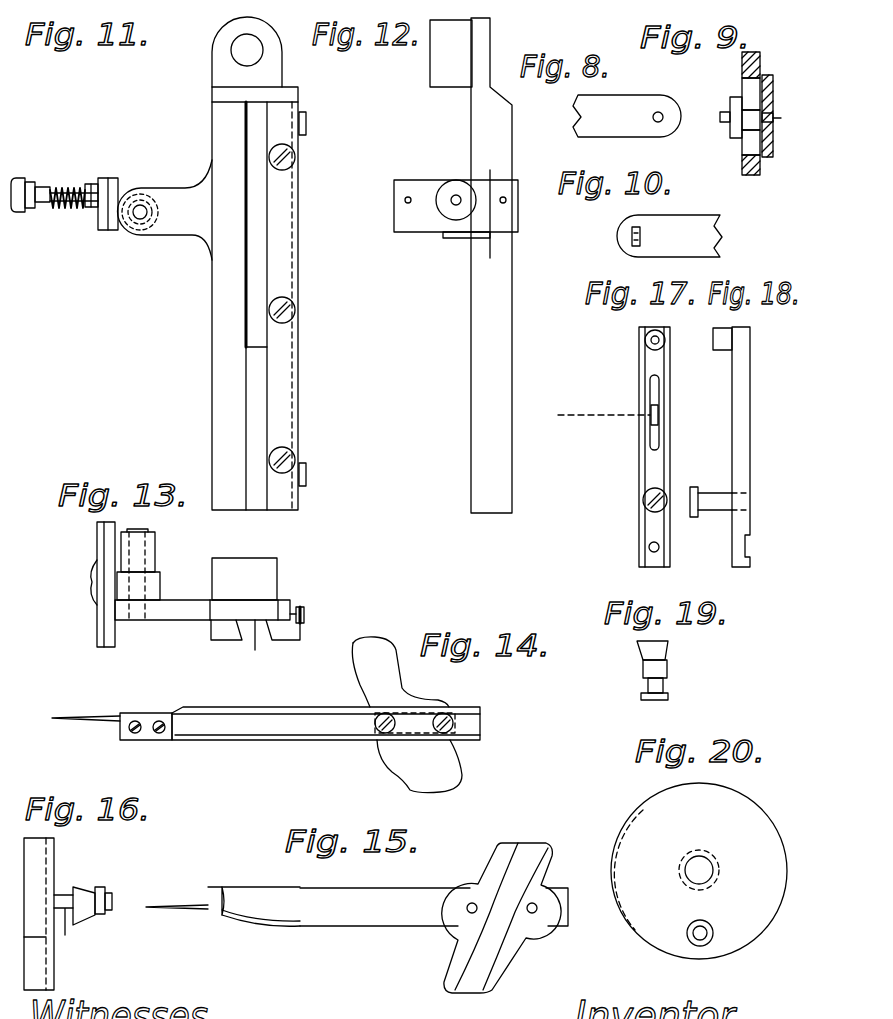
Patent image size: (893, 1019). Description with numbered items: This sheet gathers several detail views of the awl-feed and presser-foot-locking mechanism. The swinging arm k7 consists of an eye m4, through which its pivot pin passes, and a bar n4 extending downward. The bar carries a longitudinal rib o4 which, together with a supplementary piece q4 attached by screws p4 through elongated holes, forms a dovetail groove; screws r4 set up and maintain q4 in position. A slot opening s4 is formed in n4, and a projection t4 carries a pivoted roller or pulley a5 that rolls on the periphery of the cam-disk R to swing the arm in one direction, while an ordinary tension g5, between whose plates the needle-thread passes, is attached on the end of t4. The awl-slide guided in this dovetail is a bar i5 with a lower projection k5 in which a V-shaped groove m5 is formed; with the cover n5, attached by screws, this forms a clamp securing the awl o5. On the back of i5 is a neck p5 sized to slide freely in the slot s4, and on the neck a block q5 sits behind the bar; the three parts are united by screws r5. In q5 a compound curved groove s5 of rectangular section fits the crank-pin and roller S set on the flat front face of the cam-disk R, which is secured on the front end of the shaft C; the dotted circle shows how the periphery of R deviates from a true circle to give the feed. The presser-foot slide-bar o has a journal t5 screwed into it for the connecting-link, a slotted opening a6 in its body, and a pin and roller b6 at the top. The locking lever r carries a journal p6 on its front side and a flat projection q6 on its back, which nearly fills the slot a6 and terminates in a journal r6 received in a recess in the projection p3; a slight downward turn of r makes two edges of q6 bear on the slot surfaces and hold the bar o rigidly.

In FIG. 11, the eye m4 is at (262, 58).
In FIG. 12, the eye m4 is at (451, 53).
In FIG. 13, the eye m4 is at (244, 579).
In FIG. 11, the bar n4 is at (260, 520).
In FIG. 12, the bar n4 is at (491, 265).
In FIG. 13, the bar n4 is at (274, 644).
In FIG. 11, the longitudinal rib o4 is at (243, 420).
In FIG. 13, the longitudinal rib o4 is at (226, 640).
In FIG. 11, the supplementary piece q4 is at (280, 368).
In FIG. 13, the supplementary piece q4 is at (292, 638).
In FIG. 11, the slot opening s4 is at (260, 218).
In FIG. 11, the screws p4 is at (294, 157).
In FIG. 11, the screws r4 is at (307, 124).
In FIG. 13, the screws r4 is at (304, 614).
In FIG. 11, the projection t4 is at (165, 210).
In FIG. 12, the projection t4 is at (466, 238).
In FIG. 13, the projection t4 is at (164, 616).
In FIG. 11, the tension g5 is at (100, 180).
In FIG. 12, the tension g5 is at (456, 191).
In FIG. 13, the tension g5 is at (90, 582).
In FIG. 11, the swinging arm k7 is at (176, 322).
In FIG. 12, the swinging arm k7 is at (443, 336).
In FIG. 13, the swinging arm k7 is at (296, 576).
In FIG. 8, the lever r is at (627, 116).
In FIG. 9, the lever r is at (730, 130).
In FIG. 10, the lever r is at (669, 236).
In FIG. 17, the lever r is at (568, 428).
In FIG. 8, the journal p6 is at (656, 112).
In FIG. 9, the journal p6 is at (720, 117).
In FIG. 9, the flat projection q6 is at (750, 110).
In FIG. 10, the flat projection q6 is at (632, 232).
In FIG. 17, the flat projection q6 is at (650, 410).
In FIG. 9, the projection p3 is at (774, 100).
In FIG. 9, the journal r6 is at (781, 118).
In FIG. 10, the journal r6 is at (632, 242).
In FIG. 9, the slotted opening a6 is at (745, 145).
In FIG. 17, the slotted opening a6 is at (660, 430).
In FIG. 9, the slide-bar o is at (760, 168).
In FIG. 17, the slide-bar o is at (650, 460).
In FIG. 18, the slide-bar o is at (742, 430).
In FIG. 19, the slide-bar o is at (660, 650).
In FIG. 17, the pin and roller b6 is at (645, 340).
In FIG. 18, the pin and roller b6 is at (713, 338).
In FIG. 19, the pin and roller b6 is at (660, 670).
In FIG. 17, the journal t5 is at (643, 500).
In FIG. 18, the journal t5 is at (714, 510).
In FIG. 19, the journal t5 is at (648, 684).
In FIG. 13, the roller or pulley a5 is at (154, 550).
In FIG. 14, the bar i5 is at (326, 723).
In FIG. 16, the bar i5 is at (88, 912).
In FIG. 15, the bar i5 is at (434, 907).
In FIG. 14, the cover n5 is at (146, 738).
In FIG. 16, the cover n5 is at (112, 895).
In FIG. 14, the awl o5 is at (90, 725).
In FIG. 16, the awl o5 is at (176, 905).
In FIG. 14, the screws r5 is at (448, 718).
In FIG. 15, the screws r5 is at (470, 902).
In FIG. 14, the block q5 is at (407, 715).
In FIG. 16, the block q5 is at (34, 906).
In FIG. 15, the block q5 is at (508, 955).
In FIG. 16, the projection k5 is at (98, 887).
In FIG. 16, the neck p5 is at (80, 925).
In FIG. 16, the V-shaped groove m5 is at (100, 912).
In FIG. 15, the compound curved groove s5 is at (501, 916).
In FIG. 20, the shaft C is at (699, 870).
In FIG. 20, the cam-disk R is at (699, 871).
In FIG. 20, the crank-pin and roller S is at (704, 938).